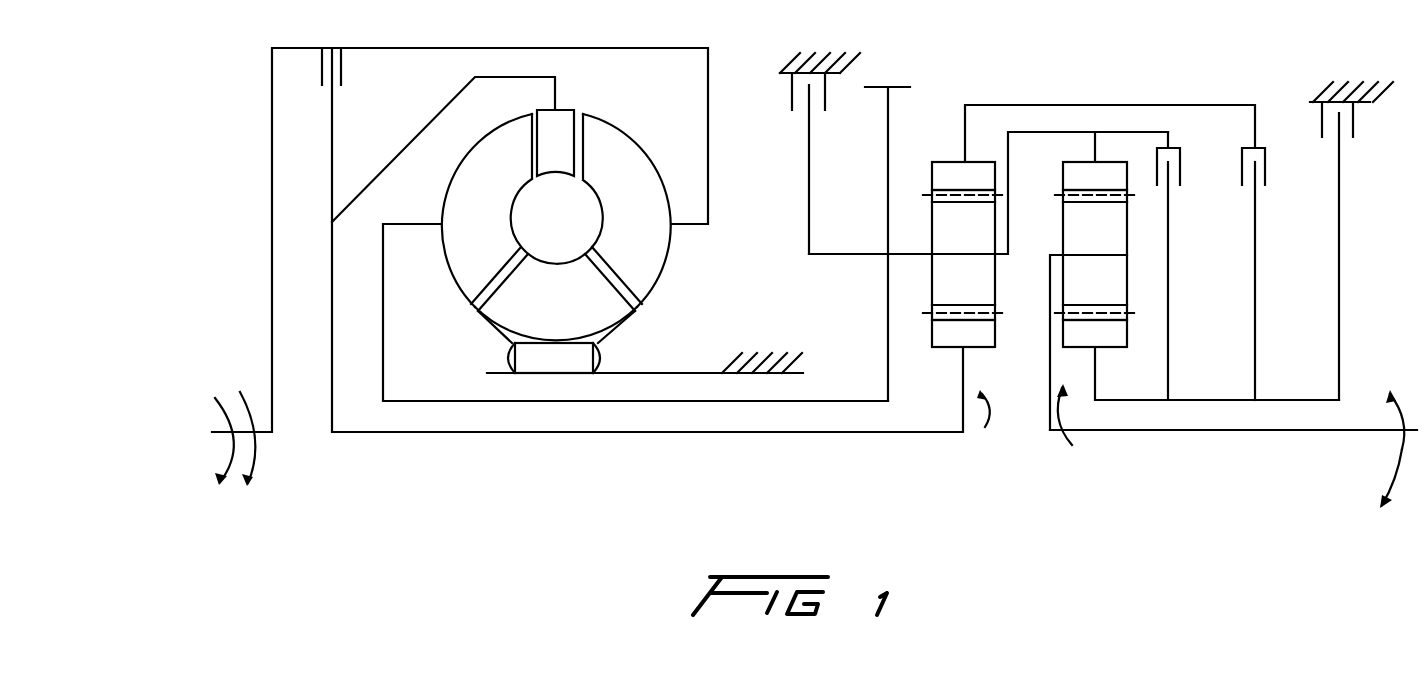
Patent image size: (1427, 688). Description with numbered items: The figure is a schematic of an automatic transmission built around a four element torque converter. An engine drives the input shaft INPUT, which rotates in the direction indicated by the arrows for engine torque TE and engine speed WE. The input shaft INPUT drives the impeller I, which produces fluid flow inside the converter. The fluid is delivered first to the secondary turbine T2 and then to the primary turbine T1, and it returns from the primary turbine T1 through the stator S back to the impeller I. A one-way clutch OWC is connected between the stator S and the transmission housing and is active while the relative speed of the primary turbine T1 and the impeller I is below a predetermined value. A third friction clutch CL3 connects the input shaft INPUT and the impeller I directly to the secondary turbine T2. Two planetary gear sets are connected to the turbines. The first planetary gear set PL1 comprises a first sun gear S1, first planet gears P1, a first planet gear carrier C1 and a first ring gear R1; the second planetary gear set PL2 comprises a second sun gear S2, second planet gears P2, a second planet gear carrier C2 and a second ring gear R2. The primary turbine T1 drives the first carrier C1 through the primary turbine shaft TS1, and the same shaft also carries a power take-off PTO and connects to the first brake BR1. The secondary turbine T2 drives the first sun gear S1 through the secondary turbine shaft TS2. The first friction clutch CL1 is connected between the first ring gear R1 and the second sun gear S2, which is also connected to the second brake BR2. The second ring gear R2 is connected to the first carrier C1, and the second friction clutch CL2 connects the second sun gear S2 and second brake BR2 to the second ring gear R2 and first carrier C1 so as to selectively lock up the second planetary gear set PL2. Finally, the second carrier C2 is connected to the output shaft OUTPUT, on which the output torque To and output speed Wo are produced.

The input shaft INPUT is at (427, 253).
The engine torque TE is at (216, 457).
The engine speed WE is at (255, 454).
The third friction clutch CL3 is at (438, 136).
The secondary turbine T2 is at (555, 143).
The primary turbine T1 is at (487, 210).
The impeller I is at (627, 210).
The stator S is at (556, 259).
The one-way clutch OWC is at (640, 342).
The primary turbine shaft TS1 is at (450, 400).
The secondary turbine shaft TS2 is at (550, 433).
The power take-off PTO is at (887, 233).
The first brake BR1 is at (800, 153).
The first planet gear carrier C1 is at (988, 207).
The first ring gear R1 is at (1093, 147).
The first planet gears P1 is at (963, 255).
The first sun gear S1 is at (963, 333).
The first planetary gear set PL1 is at (972, 423).
The second planet gear carrier C2 is at (1072, 342).
The second ring gear R2 is at (1095, 176).
The second planet gears P2 is at (1095, 255).
The second sun gear S2 is at (1201, 360).
The second planetary gear set PL2 is at (1085, 420).
The second friction clutch CL2 is at (1188, 266).
The first friction clutch CL1 is at (1273, 274).
The second brake BR2 is at (1356, 241).
The output shaft OUTPUT is at (1233, 444).
The output torque To is at (1384, 410).
The output speed Wo is at (1391, 491).